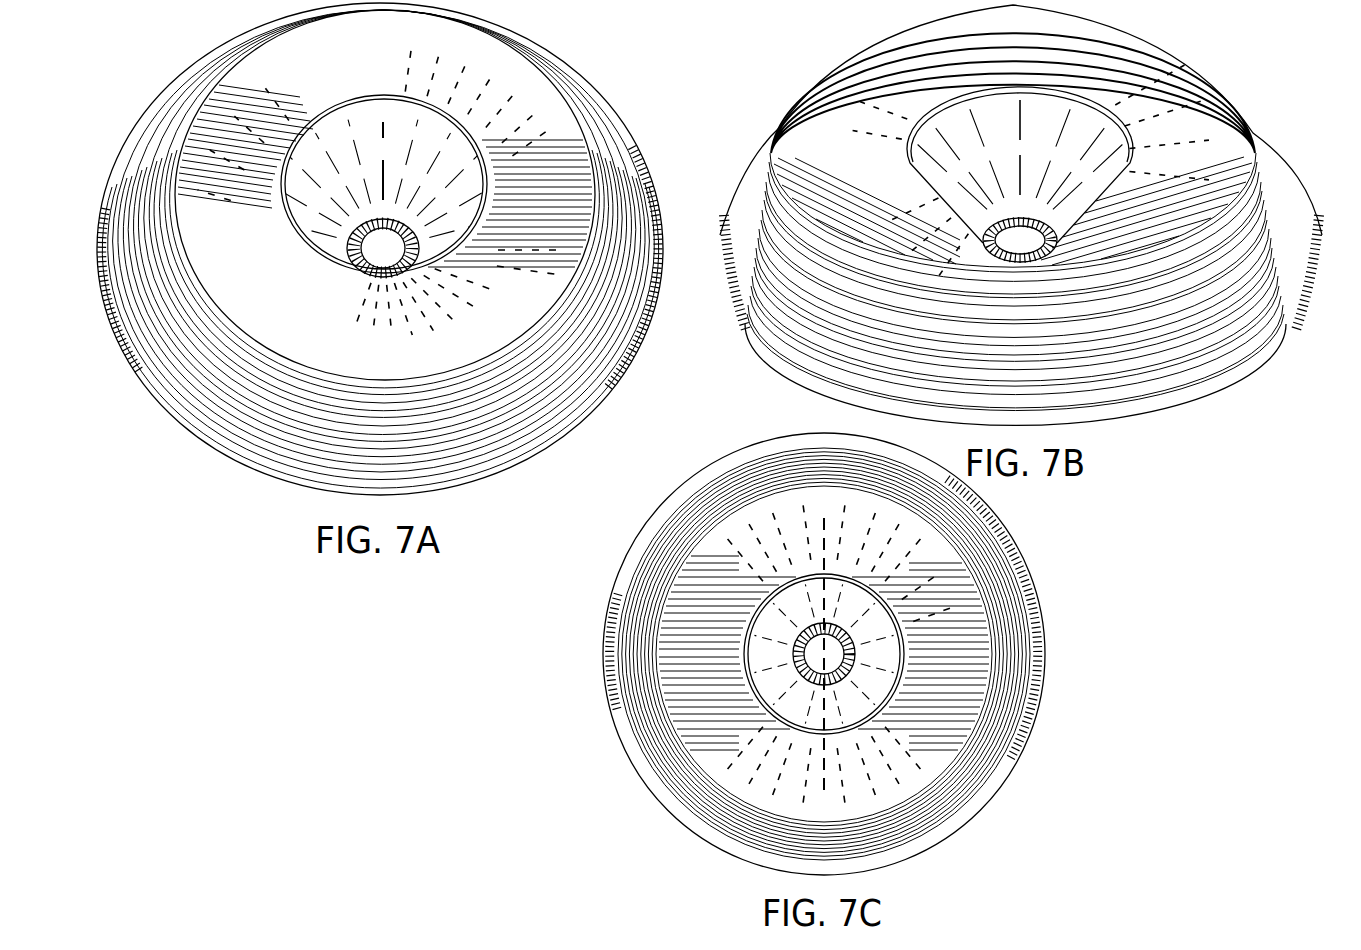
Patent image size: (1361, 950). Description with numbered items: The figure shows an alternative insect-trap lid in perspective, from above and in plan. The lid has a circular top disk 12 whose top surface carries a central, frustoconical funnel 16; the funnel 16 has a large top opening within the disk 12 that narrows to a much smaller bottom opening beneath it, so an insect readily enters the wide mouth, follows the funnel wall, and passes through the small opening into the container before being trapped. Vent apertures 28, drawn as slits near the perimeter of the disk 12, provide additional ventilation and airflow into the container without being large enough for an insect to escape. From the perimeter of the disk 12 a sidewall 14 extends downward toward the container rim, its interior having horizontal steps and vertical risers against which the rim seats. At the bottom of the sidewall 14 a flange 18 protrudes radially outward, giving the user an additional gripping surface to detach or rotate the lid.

In FIG. 7A, the top disk 12 is at (468, 47).
In FIG. 7C, the top disk 12 is at (916, 570).
In FIG. 7A, the sidewall 14 is at (278, 410).
In FIG. 7C, the sidewall 14 is at (746, 820).
In FIG. 7A, the funnel 16 is at (430, 240).
In FIG. 7C, the funnel 16 is at (867, 670).
In FIG. 7A, the flange 18 is at (163, 397).
In FIG. 7C, the flange 18 is at (631, 772).
In FIG. 7A, the vent apertures 28 is at (530, 138).